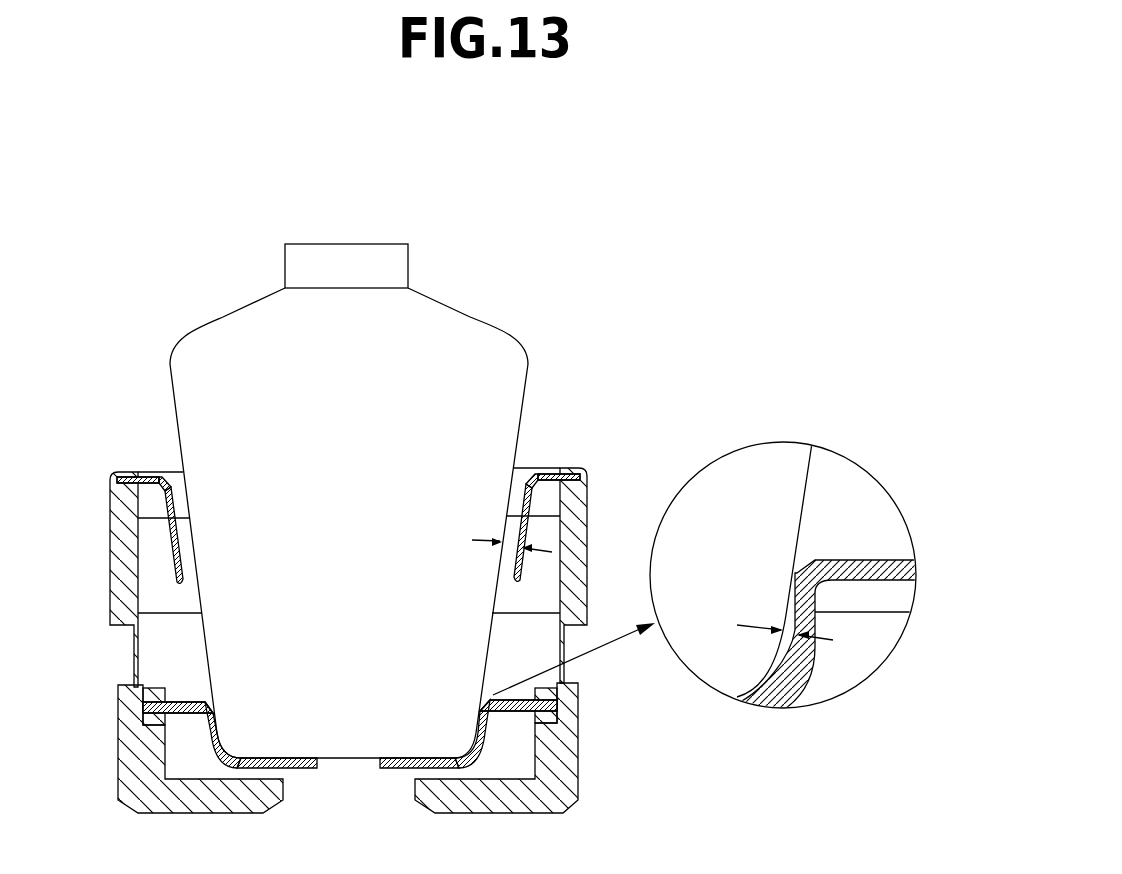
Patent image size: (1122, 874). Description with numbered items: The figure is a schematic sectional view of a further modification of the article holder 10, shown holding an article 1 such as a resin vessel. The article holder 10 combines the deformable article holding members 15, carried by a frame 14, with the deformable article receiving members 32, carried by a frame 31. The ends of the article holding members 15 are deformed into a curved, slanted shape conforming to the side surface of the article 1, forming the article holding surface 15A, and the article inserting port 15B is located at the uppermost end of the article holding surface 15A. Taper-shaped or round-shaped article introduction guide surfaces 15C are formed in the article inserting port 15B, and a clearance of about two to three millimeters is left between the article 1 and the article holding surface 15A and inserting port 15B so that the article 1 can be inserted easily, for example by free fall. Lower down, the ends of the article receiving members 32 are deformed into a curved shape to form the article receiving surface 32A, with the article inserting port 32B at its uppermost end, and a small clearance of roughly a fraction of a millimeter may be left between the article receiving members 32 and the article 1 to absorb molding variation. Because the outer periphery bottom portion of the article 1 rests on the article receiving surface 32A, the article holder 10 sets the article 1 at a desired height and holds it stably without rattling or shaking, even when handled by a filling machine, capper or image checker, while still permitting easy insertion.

The article 1 is at (240, 306).
The article holder 10 is at (78, 376).
The frame 14 is at (112, 492).
The article holding member 15 is at (175, 510).
The article holding surface 15A is at (185, 543).
The article inserting port 15B is at (160, 472).
The article introduction guide surface 15C is at (165, 476).
The frame 31 is at (155, 684).
The article receiving member 32 is at (189, 700).
The article receiving surface 32A is at (268, 758).
The article inserting port 32B is at (216, 698).